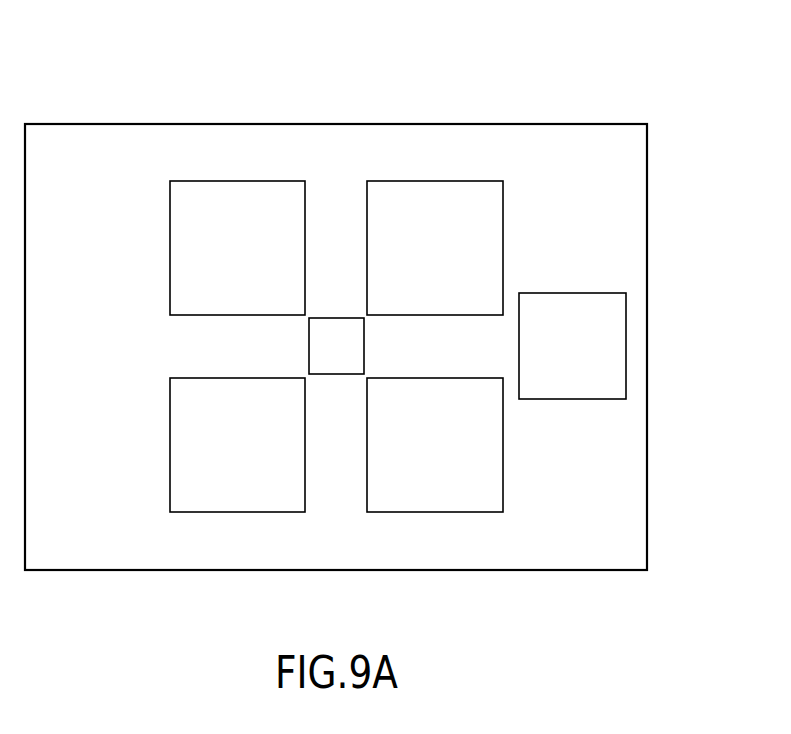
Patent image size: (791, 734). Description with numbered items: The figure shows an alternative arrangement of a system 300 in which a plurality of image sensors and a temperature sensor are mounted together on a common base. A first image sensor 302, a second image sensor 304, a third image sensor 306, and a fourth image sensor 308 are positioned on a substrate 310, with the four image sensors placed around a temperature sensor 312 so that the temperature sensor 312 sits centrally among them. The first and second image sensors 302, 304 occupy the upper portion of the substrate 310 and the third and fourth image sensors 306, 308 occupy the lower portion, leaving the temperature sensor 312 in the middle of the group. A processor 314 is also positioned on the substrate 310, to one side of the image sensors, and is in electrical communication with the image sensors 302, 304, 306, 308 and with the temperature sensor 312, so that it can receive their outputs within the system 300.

The system 300 is at (568, 72).
The first image sensor 302 is at (238, 181).
The second image sensor 304 is at (437, 181).
The third image sensor 306 is at (445, 513).
The fourth image sensor 308 is at (238, 513).
The substrate 310 is at (648, 190).
The temperature sensor 312 is at (308, 340).
The processor 314 is at (549, 293).